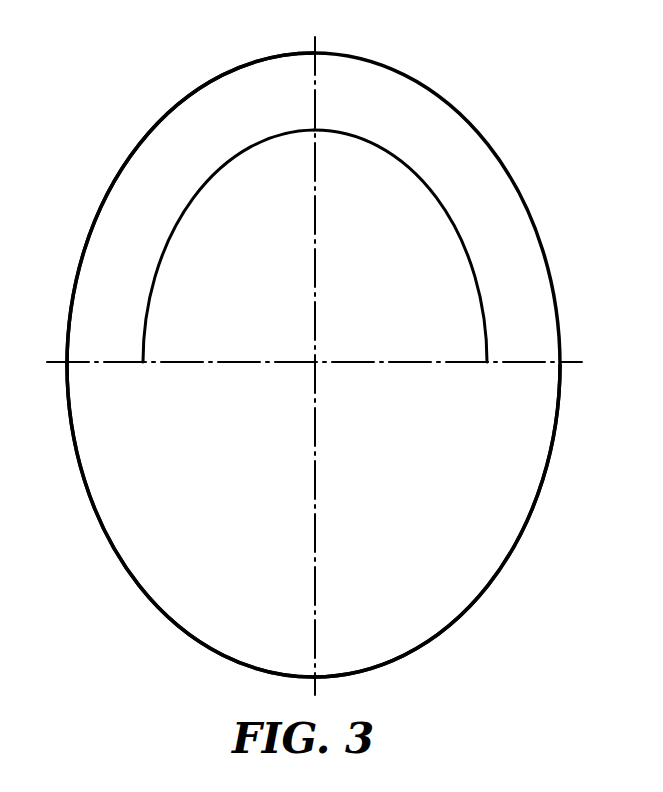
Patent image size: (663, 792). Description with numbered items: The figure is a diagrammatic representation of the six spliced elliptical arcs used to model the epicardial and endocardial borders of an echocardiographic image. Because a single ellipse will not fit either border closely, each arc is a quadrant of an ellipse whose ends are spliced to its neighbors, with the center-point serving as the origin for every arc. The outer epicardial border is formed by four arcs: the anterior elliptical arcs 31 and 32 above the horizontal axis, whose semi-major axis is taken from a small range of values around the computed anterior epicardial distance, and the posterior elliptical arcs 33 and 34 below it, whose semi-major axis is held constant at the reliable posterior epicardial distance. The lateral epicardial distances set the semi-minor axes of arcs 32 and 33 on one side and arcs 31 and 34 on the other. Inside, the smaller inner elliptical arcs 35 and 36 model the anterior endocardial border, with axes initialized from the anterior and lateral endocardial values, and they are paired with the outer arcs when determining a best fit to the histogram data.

The elliptical arc 31 is at (509, 172).
The elliptical arc 32 is at (118, 171).
The elliptical arc 33 is at (100, 523).
The elliptical arc 34 is at (530, 514).
The inner elliptical arc 35 is at (452, 226).
The inner elliptical arc 36 is at (176, 229).